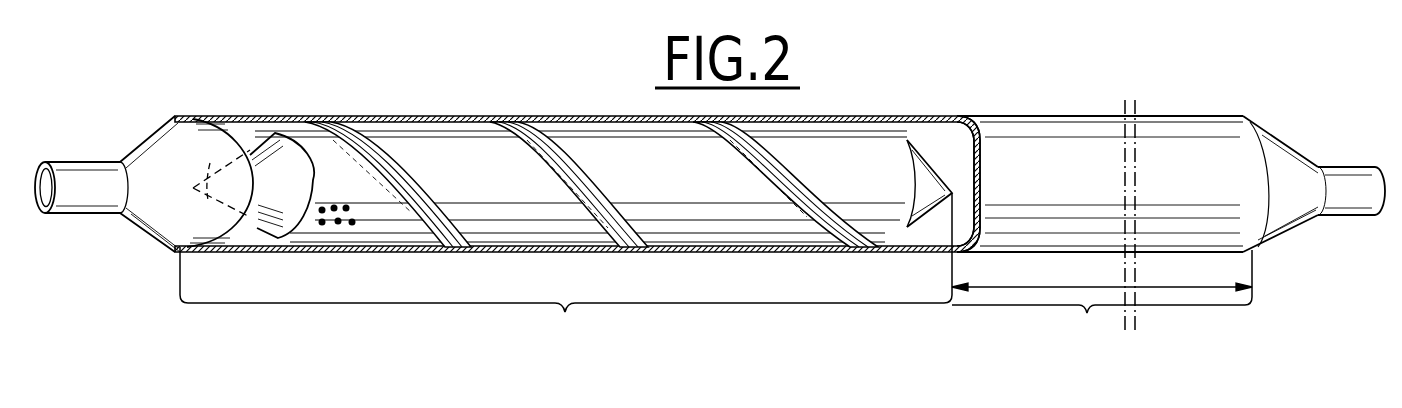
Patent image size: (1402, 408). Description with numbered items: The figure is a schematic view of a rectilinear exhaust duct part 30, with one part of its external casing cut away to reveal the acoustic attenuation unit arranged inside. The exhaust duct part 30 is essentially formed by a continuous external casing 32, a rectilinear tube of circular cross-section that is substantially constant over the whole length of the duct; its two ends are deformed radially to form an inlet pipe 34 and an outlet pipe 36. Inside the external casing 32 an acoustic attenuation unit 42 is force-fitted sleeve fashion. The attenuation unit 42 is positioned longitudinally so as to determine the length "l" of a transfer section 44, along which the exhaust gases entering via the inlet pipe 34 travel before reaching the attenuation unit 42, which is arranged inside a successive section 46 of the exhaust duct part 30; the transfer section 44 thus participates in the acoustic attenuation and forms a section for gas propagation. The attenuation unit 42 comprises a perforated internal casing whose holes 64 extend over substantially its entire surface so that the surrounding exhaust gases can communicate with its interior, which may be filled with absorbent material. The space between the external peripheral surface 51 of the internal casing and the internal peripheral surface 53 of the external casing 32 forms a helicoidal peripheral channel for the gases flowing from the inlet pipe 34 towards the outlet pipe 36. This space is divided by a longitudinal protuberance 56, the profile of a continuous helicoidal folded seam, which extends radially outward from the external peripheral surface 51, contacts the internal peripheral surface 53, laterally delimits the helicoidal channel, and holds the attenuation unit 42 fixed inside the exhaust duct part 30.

The exhaust duct part 30 is at (508, 110).
The external casing 32 is at (1060, 145).
The inlet pipe 34 is at (1348, 182).
The outlet pipe 36 is at (82, 178).
The acoustic attenuation unit 42 is at (422, 167).
The transfer section 44 is at (1102, 225).
The successive section 46 is at (566, 272).
The external peripheral surface 51 is at (613, 135).
The internal peripheral surface 53 is at (920, 124).
The longitudinal protuberance 56 is at (612, 240).
The holes 64 is at (345, 234).